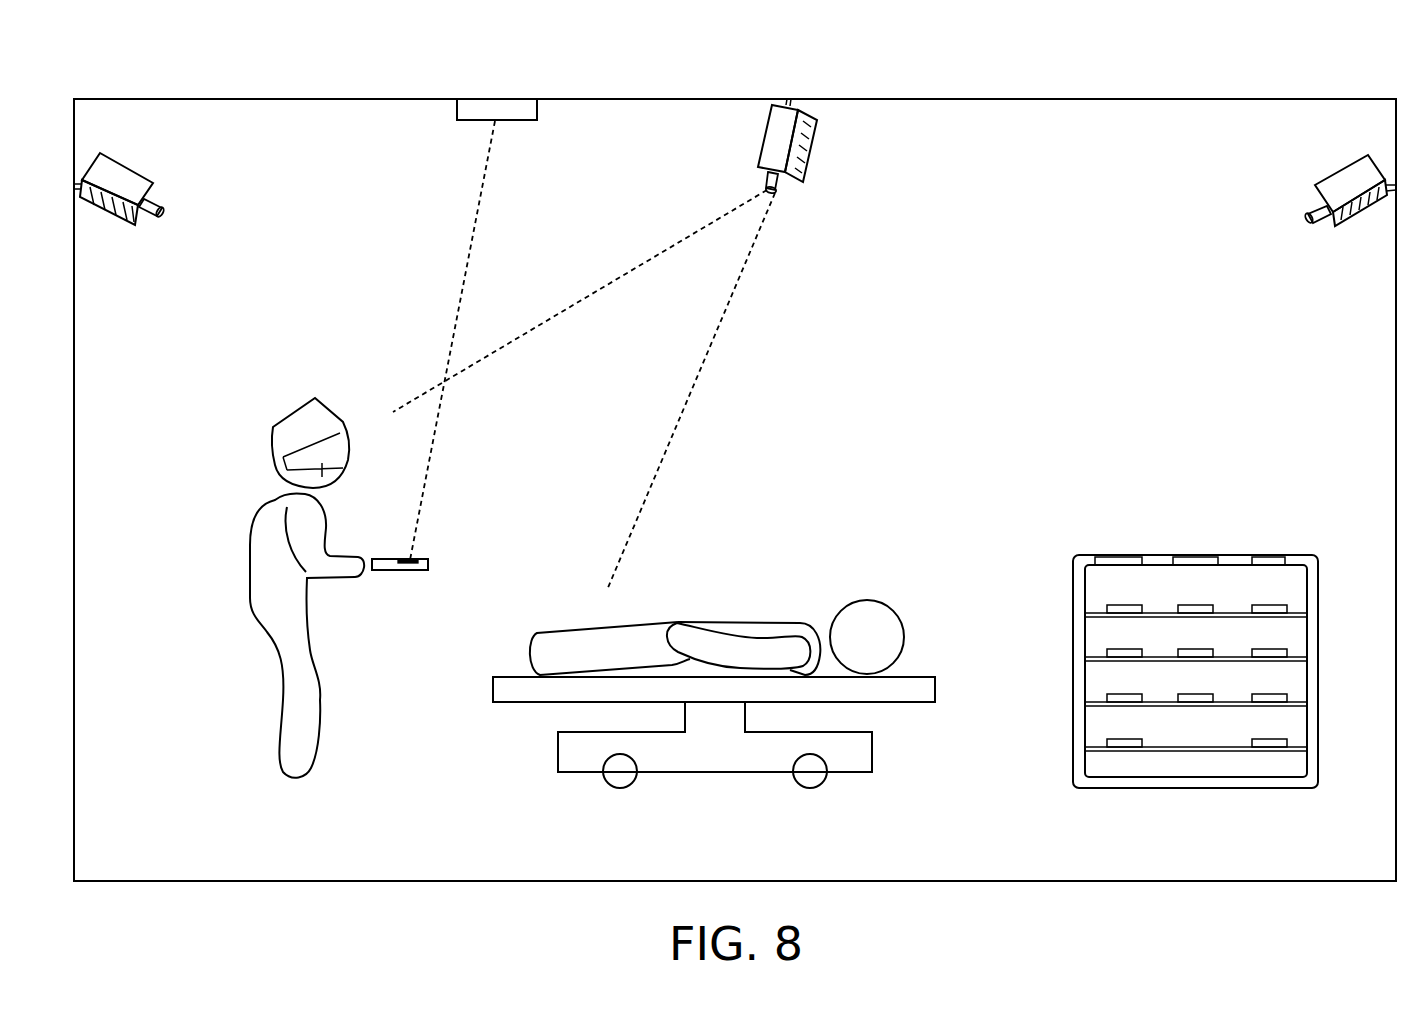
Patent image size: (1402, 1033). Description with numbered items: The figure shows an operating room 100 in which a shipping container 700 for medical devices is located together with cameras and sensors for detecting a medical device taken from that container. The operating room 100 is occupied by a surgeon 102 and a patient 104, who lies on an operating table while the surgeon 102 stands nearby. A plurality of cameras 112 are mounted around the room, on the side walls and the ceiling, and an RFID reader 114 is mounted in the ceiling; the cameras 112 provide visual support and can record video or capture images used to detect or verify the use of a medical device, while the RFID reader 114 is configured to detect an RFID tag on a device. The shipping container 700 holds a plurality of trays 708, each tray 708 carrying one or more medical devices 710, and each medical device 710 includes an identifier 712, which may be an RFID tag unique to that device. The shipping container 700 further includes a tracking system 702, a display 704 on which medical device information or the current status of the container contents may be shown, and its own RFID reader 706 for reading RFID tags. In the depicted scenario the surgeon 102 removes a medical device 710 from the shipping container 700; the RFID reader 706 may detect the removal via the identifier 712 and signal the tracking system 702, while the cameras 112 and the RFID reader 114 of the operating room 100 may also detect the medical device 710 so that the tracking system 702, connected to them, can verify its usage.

The operating room 100 is at (269, 70).
The cameras 112 is at (125, 180).
The RFID reader 114 is at (513, 107).
The surgeon 102 is at (295, 422).
The patient 104 is at (805, 632).
The medical device 710 is at (382, 568).
The identifier 712 is at (417, 559).
The shipping container 700 is at (1188, 667).
The tracking system 702 is at (1133, 558).
The display 704 is at (1210, 558).
The RFID reader 706 is at (1277, 558).
The trays 708 is at (1237, 751).